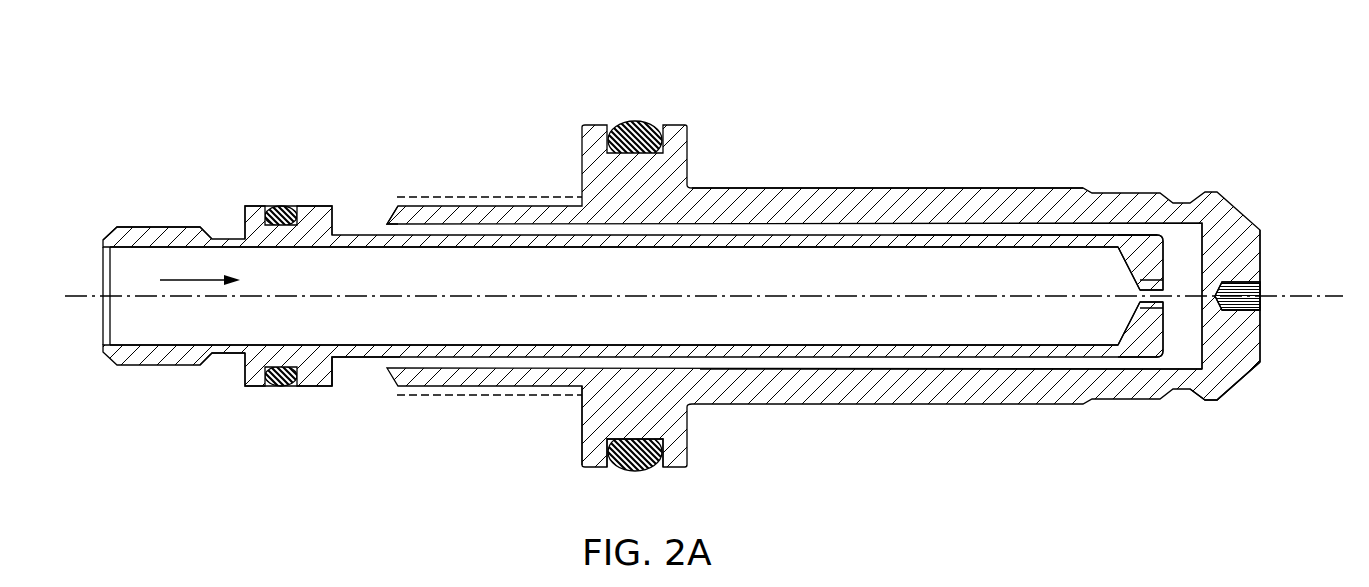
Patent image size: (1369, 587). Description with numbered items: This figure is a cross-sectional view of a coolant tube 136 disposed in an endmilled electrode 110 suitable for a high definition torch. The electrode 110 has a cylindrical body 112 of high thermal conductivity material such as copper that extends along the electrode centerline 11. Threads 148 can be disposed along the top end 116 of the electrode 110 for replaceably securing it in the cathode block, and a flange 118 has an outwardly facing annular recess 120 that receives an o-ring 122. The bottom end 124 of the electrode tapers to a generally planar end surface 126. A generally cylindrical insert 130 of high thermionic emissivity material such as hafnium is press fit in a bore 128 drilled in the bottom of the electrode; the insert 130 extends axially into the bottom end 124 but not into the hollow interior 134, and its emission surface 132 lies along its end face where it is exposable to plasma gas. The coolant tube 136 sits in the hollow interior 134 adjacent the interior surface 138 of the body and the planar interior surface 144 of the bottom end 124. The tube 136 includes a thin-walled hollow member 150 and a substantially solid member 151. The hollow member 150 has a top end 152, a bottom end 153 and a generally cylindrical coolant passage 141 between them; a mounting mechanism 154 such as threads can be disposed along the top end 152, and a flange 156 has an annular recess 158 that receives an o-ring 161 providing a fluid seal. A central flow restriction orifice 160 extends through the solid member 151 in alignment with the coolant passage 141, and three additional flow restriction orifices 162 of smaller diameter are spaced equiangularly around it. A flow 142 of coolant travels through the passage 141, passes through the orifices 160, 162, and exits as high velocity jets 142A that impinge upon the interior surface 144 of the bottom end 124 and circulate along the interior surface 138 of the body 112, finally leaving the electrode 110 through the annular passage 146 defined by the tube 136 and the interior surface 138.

The longitudinal axis 11 is at (1327, 293).
The endmilled electrode 110 is at (717, 284).
The cylindrical body 112 is at (740, 405).
The top end 116 is at (392, 216).
The flange 118 is at (582, 465).
The annular recess 120 is at (607, 431).
The o-ring 122 is at (634, 471).
The bottom end 124 is at (1222, 422).
The planar end surface 126 is at (1262, 241).
The bore 128 is at (1262, 327).
The insert 130 is at (1262, 278).
The emission surface 132 is at (1262, 303).
The hollow interior 134 is at (1077, 232).
The coolant tube 136 is at (361, 224).
The interior surface 138 is at (905, 225).
The coolant passage 141 is at (561, 281).
The coolant flow 142 is at (191, 281).
The high velocity jets 142A is at (1118, 258).
The planar interior surface 144 is at (1198, 247).
The annular passage 146 is at (952, 364).
The threads 148 is at (453, 196).
The hollow member 150 is at (219, 238).
The substantially solid member 151 is at (1134, 364).
The top end 152 is at (224, 362).
The bottom end 153 is at (1128, 228).
The mounting mechanism 154 is at (152, 226).
The flange 156 is at (334, 380).
The annular recess 158 is at (261, 388).
The central flow restriction orifice 160 is at (1157, 300).
The O-ring 161 is at (281, 381).
The additional flow restriction orifices 162 is at (1150, 253).